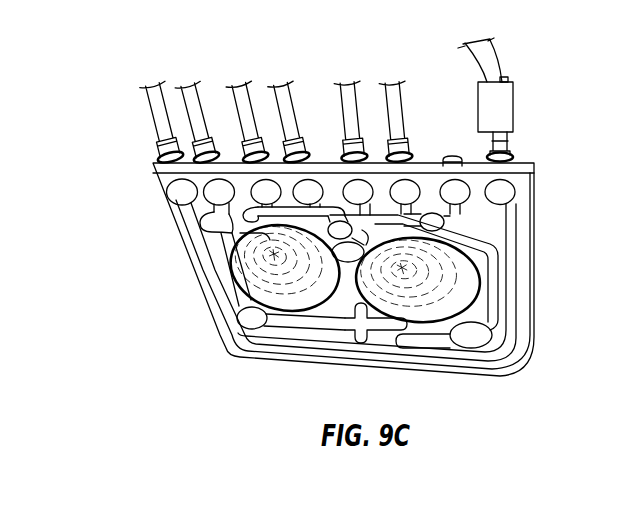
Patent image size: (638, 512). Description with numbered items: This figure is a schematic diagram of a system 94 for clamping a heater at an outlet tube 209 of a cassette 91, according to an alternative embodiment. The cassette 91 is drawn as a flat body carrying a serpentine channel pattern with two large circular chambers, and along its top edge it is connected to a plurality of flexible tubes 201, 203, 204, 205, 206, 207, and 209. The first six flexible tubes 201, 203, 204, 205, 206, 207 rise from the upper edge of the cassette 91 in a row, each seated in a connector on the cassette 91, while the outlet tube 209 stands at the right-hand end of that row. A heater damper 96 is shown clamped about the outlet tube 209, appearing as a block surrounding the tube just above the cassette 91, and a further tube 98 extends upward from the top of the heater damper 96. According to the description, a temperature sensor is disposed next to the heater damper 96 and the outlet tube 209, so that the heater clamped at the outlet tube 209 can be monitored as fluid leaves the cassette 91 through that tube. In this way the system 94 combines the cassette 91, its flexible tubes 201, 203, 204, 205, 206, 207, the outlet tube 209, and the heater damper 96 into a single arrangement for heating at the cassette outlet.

The cassette 91 is at (147, 163).
The system 94 is at (255, 92).
The heater damper 96 is at (502, 113).
The outlet tube 98 is at (500, 70).
The flexible tube 201 is at (145, 86).
The flexible tube 203 is at (183, 79).
The flexible tube 204 is at (238, 80).
The flexible tube 205 is at (281, 82).
The flexible tube 206 is at (352, 82).
The flexible tube 207 is at (400, 117).
The outlet tube 209 is at (503, 138).